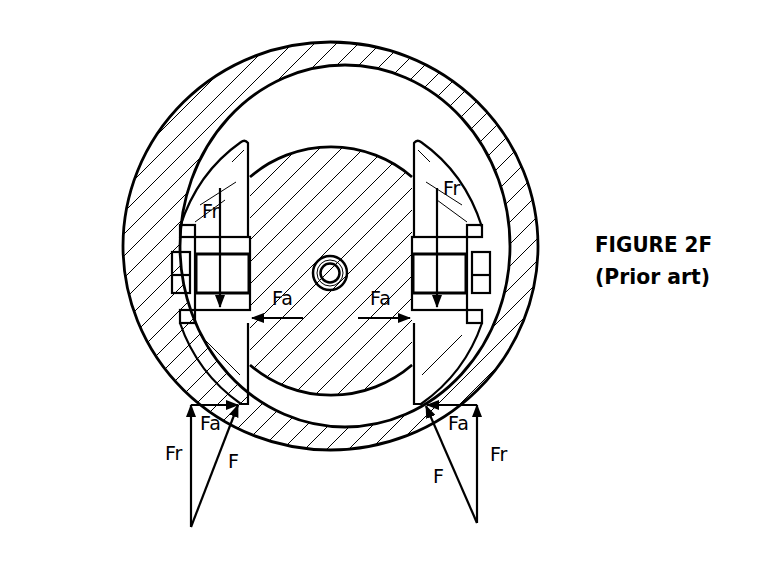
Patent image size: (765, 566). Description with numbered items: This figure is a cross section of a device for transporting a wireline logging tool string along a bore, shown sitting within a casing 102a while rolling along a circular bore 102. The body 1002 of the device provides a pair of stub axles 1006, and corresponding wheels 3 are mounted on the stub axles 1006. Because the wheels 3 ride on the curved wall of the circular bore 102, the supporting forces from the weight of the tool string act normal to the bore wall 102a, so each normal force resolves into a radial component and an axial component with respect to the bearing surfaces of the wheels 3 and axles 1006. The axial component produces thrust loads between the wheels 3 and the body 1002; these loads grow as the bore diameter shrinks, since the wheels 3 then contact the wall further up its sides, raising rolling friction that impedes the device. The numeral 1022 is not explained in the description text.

The casing 102a is at (190, 115).
The circular bore 102 is at (408, 118).
The stub axles 1006 is at (188, 222).
The body 1002 is at (273, 347).
The wheels 3 is at (247, 143).
The force diagram 1022 is at (628, 561).